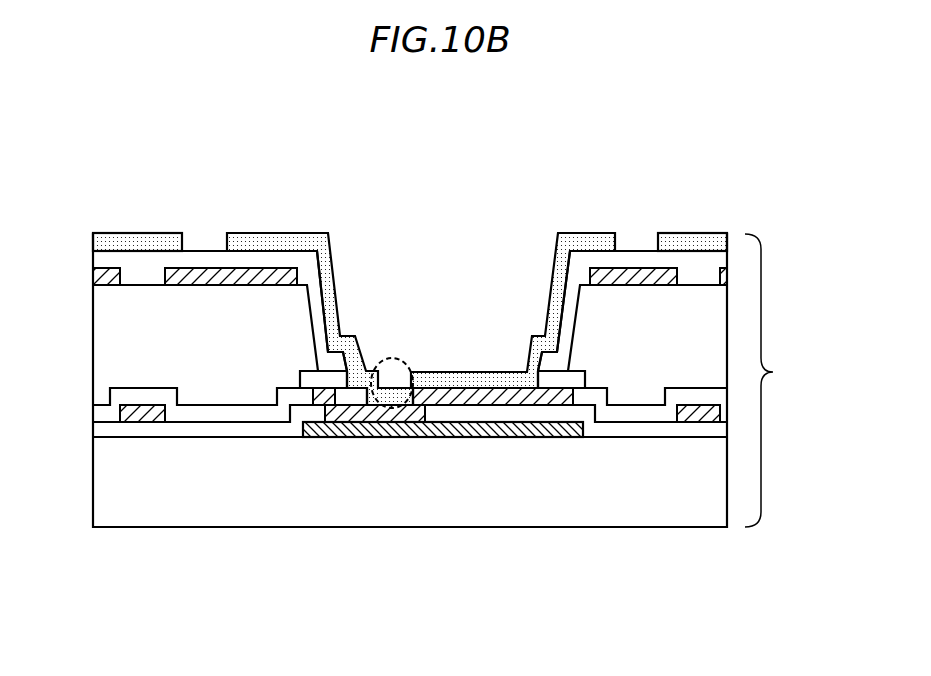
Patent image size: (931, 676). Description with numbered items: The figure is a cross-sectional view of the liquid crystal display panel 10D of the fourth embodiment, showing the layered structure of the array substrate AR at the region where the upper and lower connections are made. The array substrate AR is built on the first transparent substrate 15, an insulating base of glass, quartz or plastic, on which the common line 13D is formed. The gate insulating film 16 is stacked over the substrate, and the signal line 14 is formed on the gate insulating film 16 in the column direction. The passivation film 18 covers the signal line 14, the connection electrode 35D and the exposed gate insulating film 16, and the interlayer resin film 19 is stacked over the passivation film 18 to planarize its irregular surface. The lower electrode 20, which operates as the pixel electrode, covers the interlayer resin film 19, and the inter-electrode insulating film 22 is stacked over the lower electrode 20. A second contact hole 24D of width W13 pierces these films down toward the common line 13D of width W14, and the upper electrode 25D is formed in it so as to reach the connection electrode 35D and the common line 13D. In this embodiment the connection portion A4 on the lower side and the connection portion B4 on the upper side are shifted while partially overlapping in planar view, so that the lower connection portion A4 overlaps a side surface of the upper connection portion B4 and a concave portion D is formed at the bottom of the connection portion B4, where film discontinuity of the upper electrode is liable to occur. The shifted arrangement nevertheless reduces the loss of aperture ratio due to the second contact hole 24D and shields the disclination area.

The liquid crystal display panel 10D is at (108, 118).
The first transparent substrate 15 is at (609, 482).
The common line 13D is at (348, 438).
The gate insulating film 16 is at (246, 430).
The passivation film 18 is at (195, 415).
The signal line 14 is at (139, 422).
The connection portion A4 is at (336, 425).
The drain electrode 35D is at (547, 392).
The interlayer resin film 19 is at (180, 355).
The inter-electrode insulating film 22 is at (145, 262).
The lower electrode 20 is at (208, 268).
The second contact hole 24D is at (355, 320).
The pixel electrode upper portion 25D is at (633, 244).
The drain electrode D is at (401, 357).
The connection portion B4 is at (473, 385).
The contact hole width W13 is at (558, 223).
The lower wiring width W14 is at (584, 652).
The array substrate AR is at (779, 380).